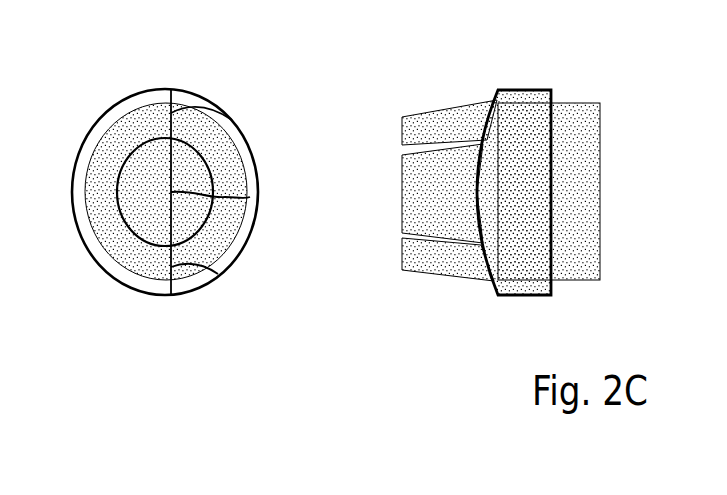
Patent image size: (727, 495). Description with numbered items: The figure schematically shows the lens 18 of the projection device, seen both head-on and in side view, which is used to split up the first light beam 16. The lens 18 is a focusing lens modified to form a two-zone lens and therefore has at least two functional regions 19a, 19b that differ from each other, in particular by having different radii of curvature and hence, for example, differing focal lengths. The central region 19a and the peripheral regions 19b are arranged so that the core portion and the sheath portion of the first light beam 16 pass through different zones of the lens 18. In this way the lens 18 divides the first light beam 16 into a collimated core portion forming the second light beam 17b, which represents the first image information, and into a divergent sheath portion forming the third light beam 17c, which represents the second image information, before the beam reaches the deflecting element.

The first light beam 16 is at (116, 136).
The lens 18 is at (140, 90).
The second light beam 17b is at (415, 192).
The third light beam 17c is at (413, 133).
The first region of the lens 19a is at (250, 197).
The second region of the lens 19b is at (232, 120).